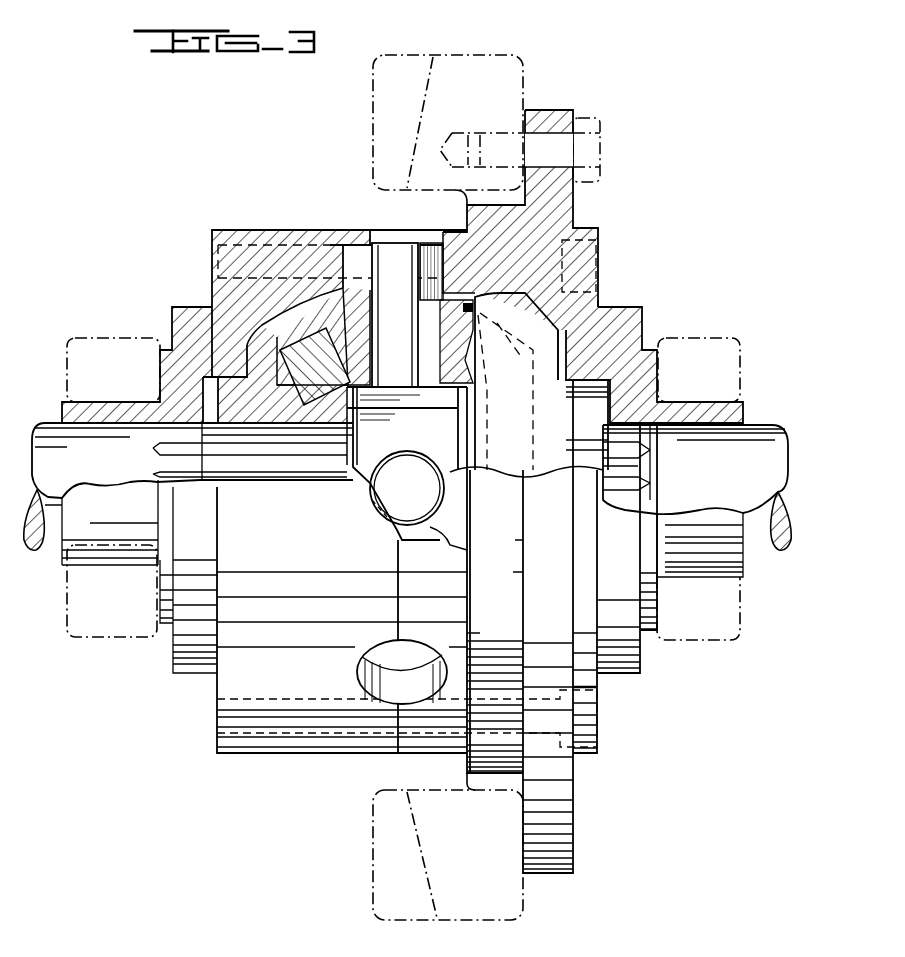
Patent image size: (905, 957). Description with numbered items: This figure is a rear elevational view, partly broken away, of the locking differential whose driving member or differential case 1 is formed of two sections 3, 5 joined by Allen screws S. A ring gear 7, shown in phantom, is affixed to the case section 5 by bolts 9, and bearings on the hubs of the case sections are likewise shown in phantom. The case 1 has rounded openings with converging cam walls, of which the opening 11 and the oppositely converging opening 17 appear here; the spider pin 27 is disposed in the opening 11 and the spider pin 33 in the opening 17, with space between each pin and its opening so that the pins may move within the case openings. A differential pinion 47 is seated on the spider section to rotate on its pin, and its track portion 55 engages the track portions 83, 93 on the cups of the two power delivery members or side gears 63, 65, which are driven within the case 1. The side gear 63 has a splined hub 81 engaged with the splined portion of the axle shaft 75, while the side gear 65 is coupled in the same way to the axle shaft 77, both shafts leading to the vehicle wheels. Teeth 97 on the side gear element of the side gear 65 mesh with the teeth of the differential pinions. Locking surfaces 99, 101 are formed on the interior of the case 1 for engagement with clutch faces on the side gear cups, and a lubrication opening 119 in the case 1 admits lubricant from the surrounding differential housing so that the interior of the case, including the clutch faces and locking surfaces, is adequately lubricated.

The driving member or differential case 1 is at (272, 212).
The case section 3 is at (263, 737).
The case section 5 is at (643, 330).
The ring gear 7 is at (507, 73).
The bolts 9 is at (594, 149).
The rounded opening 11 is at (360, 242).
The rounded opening 17 is at (441, 537).
The spider pin 27 is at (415, 341).
The spider pin 33 is at (419, 499).
The differential pinion 47 is at (441, 408).
The track portion 55 is at (470, 302).
The power delivery member or side gear 63 is at (237, 348).
The power delivery member or side gear 65 is at (542, 362).
The axle shaft 75 is at (109, 472).
The axle shaft 77 is at (724, 488).
The splined hub 81 is at (255, 411).
The track portion 83 is at (347, 298).
The track portion 93 is at (470, 292).
The teeth 97 is at (603, 295).
The locking surface 99 is at (288, 300).
The locking surface 101 is at (538, 285).
The lubrication opening 119 is at (383, 668).
The Allen screws S is at (606, 240).